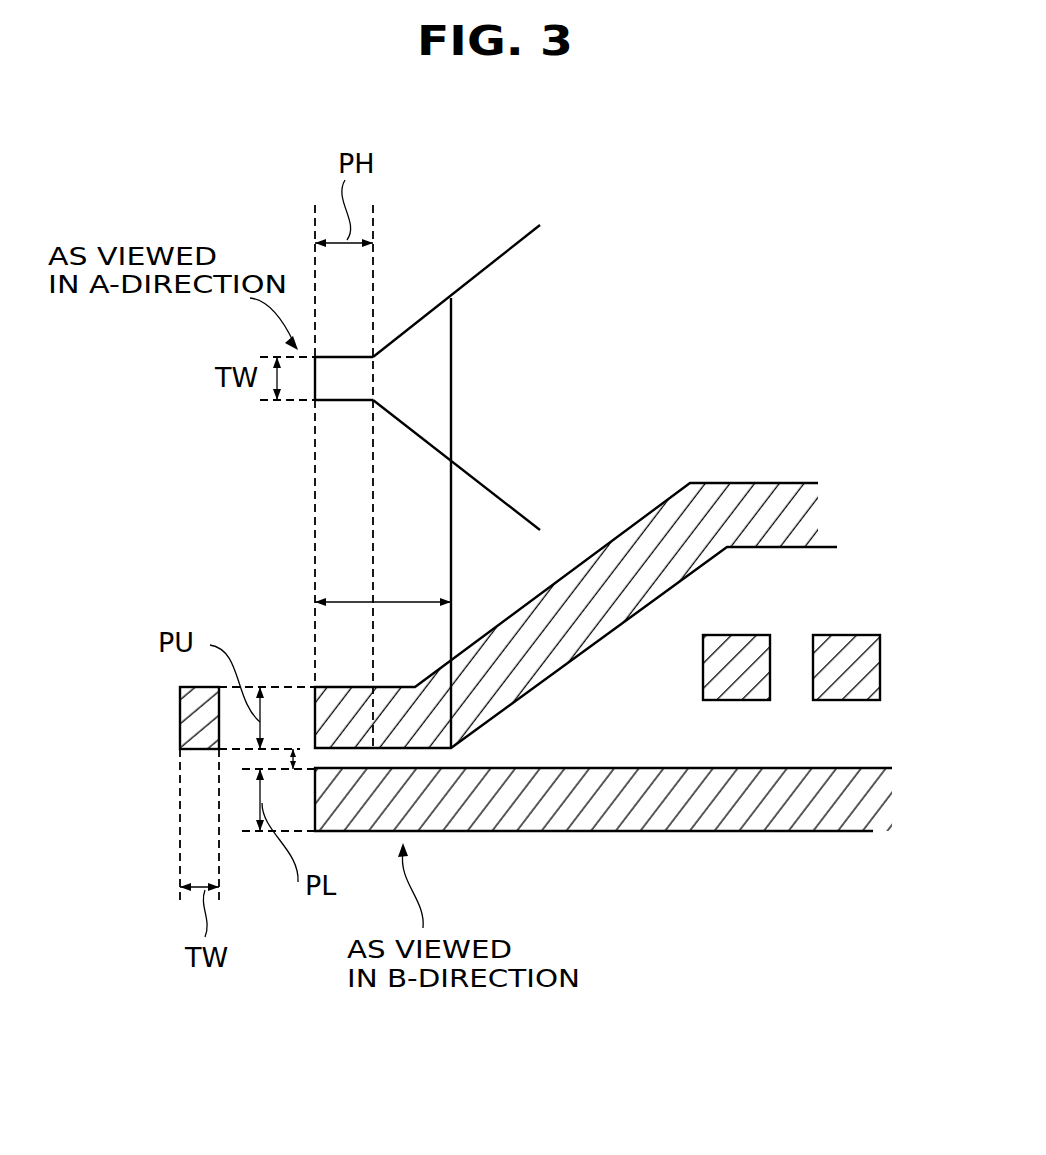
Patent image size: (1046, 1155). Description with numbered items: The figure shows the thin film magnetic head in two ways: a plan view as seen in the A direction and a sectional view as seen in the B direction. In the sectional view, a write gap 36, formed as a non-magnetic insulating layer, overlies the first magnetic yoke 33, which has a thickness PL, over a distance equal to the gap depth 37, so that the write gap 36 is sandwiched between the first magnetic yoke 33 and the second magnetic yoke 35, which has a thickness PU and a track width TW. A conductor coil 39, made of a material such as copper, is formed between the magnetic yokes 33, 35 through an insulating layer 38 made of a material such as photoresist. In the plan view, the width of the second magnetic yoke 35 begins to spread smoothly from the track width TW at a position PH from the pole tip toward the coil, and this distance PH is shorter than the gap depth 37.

The first magnetic yoke 33 is at (470, 812).
The second magnetic yoke 35 is at (523, 388).
The write gap 36 is at (293, 750).
The gap depth 37 is at (357, 598).
The insulating layer 38 is at (706, 695).
The conductor coil 39 is at (835, 690).